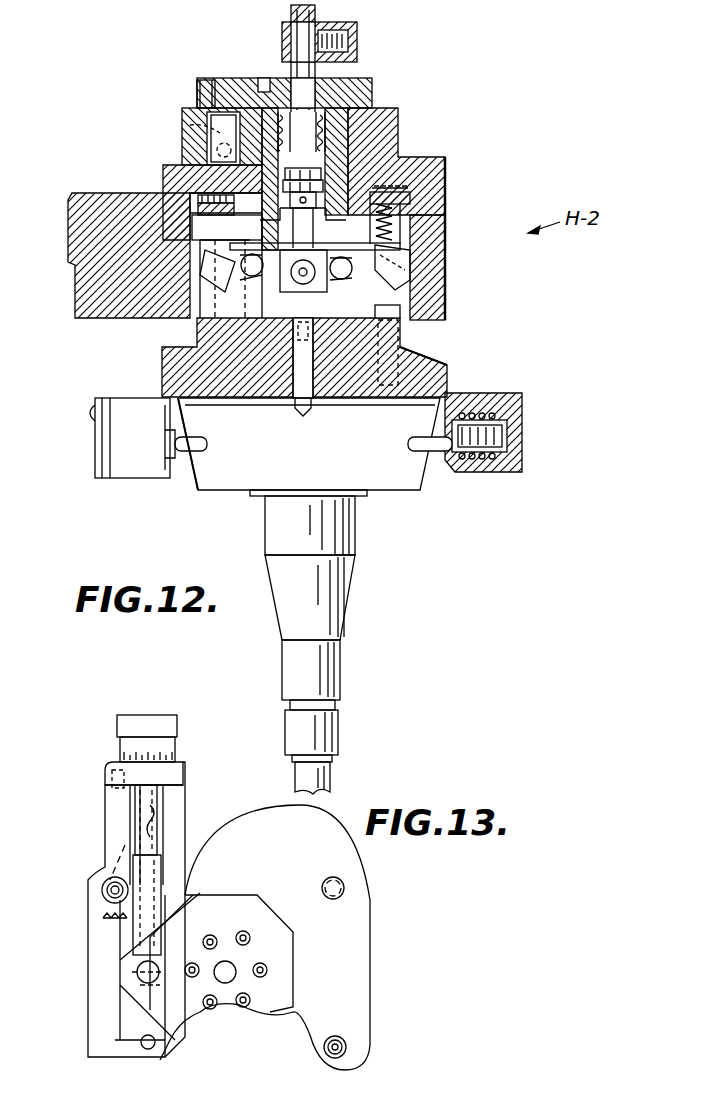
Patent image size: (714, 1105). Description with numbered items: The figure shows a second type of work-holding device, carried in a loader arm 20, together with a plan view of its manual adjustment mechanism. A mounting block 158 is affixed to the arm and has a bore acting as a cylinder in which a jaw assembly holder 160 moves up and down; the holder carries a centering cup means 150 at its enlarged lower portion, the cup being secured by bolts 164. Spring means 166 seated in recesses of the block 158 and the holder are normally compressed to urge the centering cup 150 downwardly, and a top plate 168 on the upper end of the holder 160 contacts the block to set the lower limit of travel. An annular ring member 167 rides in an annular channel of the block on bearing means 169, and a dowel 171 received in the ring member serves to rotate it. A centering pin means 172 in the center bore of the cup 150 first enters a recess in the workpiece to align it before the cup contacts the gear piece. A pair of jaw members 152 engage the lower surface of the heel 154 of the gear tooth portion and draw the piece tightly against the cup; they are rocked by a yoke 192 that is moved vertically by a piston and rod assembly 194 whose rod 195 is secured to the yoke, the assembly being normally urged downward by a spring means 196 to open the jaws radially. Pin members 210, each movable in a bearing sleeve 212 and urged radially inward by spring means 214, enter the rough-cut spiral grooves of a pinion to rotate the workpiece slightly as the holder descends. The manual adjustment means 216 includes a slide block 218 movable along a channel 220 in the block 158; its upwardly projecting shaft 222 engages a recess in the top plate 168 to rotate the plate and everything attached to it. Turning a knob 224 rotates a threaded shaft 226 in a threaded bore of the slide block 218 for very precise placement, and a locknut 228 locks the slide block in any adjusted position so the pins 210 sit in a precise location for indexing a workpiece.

In FIG. 12, the loader arm 20 is at (88, 183).
In FIG. 12, the centering cup means 150 is at (440, 362).
In FIG. 12, the jaw members 152 is at (420, 270).
In FIG. 12, the heel 154 is at (385, 497).
In FIG. 12, the mounting block 158 is at (400, 128).
In FIG. 12, the jaw assembly holder 160 is at (420, 313).
In FIG. 12, the bolts 164 is at (400, 337).
In FIG. 12, the spring means 166 is at (445, 220).
In FIG. 12, the annular ring member 167 is at (445, 192).
In FIG. 12, the top plate 168 is at (340, 85).
In FIG. 13, the top plate 168 is at (290, 972).
In FIG. 12, the bearing means 169 is at (445, 172).
In FIG. 12, the dowel 171 is at (210, 233).
In FIG. 12, the centering pin means 172 is at (280, 400).
In FIG. 12, the yoke 192 is at (275, 290).
In FIG. 12, the piston and rod assembly 194 is at (363, 152).
In FIG. 12, the rod 195 is at (440, 160).
In FIG. 12, the spring means 196 is at (372, 104).
In FIG. 12, the pin members 210 is at (205, 452).
In FIG. 12, the bearing sleeve 212 is at (463, 470).
In FIG. 12, the spring means 214 is at (512, 430).
In FIG. 13, the manual adjustment means 216 is at (95, 785).
In FIG. 12, the slide block 218 is at (200, 170).
In FIG. 13, the slide block 218 is at (145, 852).
In FIG. 12, the channel 220 is at (215, 140).
In FIG. 13, the channel 220 is at (155, 820).
In FIG. 12, the projecting shaft 222 is at (200, 95).
In FIG. 13, the projecting shaft 222 is at (125, 978).
In FIG. 13, the knob 224 is at (118, 727).
In FIG. 13, the threaded shaft 226 is at (135, 828).
In FIG. 13, the locknut 228 is at (100, 925).